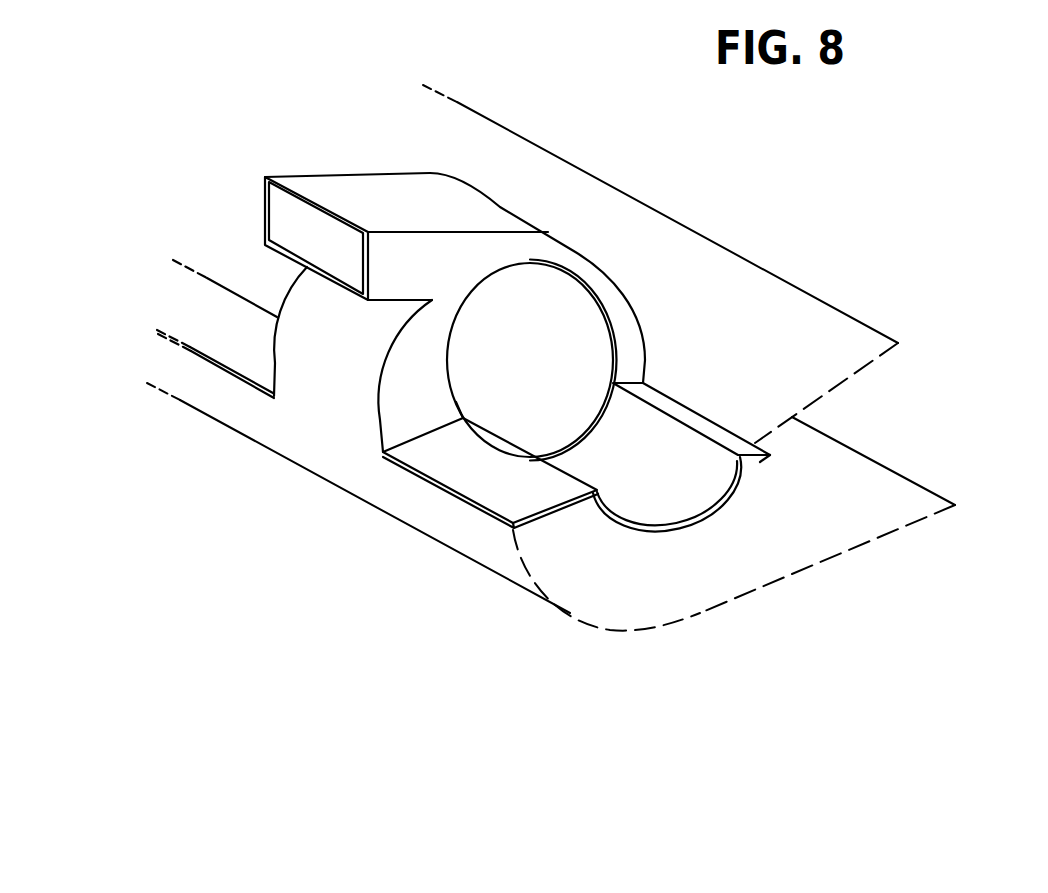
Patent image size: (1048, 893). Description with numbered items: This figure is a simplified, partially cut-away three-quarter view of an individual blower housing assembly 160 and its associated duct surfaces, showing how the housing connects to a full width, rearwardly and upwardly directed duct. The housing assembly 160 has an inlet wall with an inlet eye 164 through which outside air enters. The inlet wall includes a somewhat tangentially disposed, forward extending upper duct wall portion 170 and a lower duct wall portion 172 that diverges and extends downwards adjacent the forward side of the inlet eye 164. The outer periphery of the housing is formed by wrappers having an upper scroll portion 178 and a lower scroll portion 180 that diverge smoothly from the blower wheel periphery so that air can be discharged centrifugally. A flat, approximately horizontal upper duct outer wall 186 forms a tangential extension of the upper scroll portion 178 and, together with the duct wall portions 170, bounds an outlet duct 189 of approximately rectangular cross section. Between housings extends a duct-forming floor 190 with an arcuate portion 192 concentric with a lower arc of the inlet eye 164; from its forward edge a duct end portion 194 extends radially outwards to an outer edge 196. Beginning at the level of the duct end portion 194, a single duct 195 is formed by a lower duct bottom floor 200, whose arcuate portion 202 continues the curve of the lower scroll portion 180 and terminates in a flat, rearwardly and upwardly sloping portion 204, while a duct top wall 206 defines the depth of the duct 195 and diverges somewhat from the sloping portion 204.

The housing assembly 160 is at (395, 145).
The inlet eye 164 is at (611, 366).
The upper duct wall portion 170 is at (463, 276).
The lower duct wall portion 172 is at (427, 414).
The upper scroll portion 178 is at (557, 198).
The lower scroll portion 180 is at (334, 376).
The upper duct outer wall 186 is at (416, 207).
The outlet duct 189 is at (255, 212).
The duct-forming floor 190 is at (680, 537).
The arcuate portion 192 is at (733, 486).
The duct end portion 194 is at (226, 327).
The single duct 195 is at (916, 432).
The outer edge 196 is at (476, 502).
The lower duct bottom floor 200 is at (695, 640).
The arcuate portion 202 is at (598, 627).
The flat rearwardly and upwardly sloping portion 204 is at (907, 525).
The duct top wall 206 is at (768, 273).